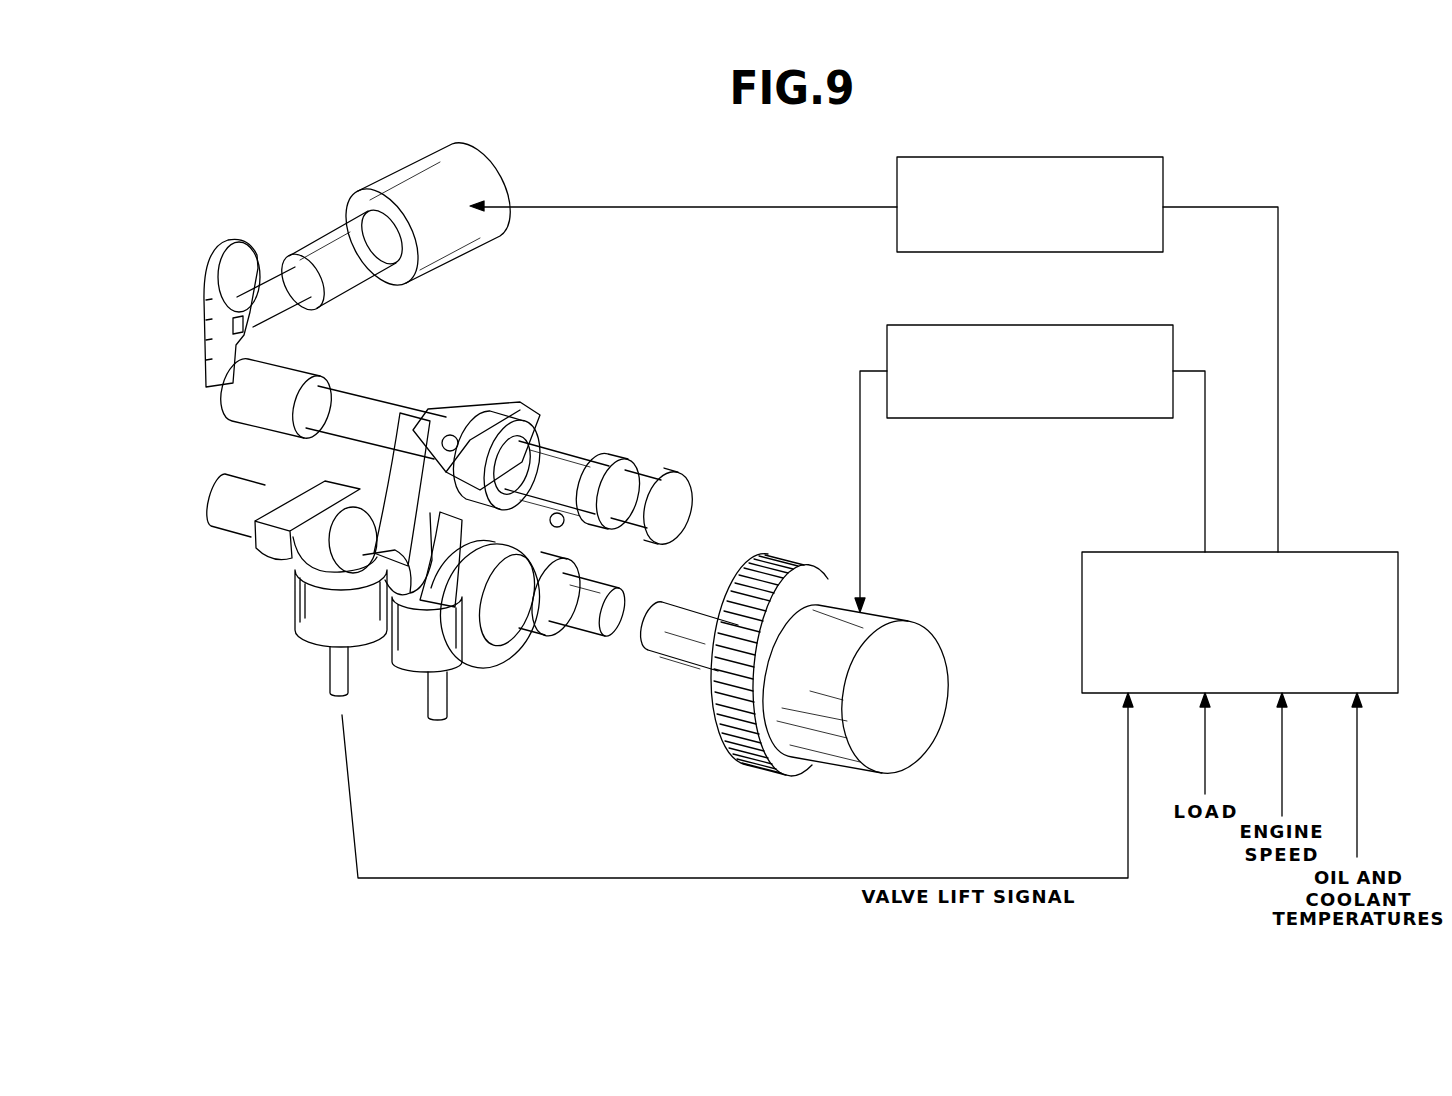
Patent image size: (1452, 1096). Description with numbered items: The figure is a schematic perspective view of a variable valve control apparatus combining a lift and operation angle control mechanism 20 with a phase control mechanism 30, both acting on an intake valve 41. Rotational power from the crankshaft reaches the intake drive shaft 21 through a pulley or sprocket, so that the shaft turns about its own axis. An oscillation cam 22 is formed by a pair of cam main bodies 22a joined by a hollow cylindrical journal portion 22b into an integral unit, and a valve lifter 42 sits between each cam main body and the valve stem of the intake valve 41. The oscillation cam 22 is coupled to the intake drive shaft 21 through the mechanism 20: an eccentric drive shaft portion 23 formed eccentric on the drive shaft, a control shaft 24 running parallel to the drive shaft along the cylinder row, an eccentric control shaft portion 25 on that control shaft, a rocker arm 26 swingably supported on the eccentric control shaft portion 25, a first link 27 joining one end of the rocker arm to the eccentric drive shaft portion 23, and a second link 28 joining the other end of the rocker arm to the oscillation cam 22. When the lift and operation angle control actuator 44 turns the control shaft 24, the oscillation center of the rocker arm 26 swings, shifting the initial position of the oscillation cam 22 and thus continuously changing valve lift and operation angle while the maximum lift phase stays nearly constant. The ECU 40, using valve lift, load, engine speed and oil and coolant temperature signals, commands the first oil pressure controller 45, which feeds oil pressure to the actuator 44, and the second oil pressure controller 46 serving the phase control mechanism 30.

The lift and operation angle control mechanism 20 is at (614, 347).
The intake drive shaft 21 is at (690, 620).
The oscillation cam 22 is at (302, 643).
The cam main body 22a is at (330, 600).
The hollow cylindrical journal portion 22b is at (333, 567).
The eccentric drive shaft portion 23 is at (500, 637).
The control shaft 24 is at (582, 470).
The eccentric control shaft portion 25 is at (493, 497).
The rocker arm 26 is at (467, 430).
The first link 27 is at (462, 622).
The second link 28 is at (407, 463).
The phase control mechanism 30 is at (880, 628).
The ECU 40 is at (1160, 550).
The intake valve 41 is at (423, 708).
The valve lifter 42 is at (297, 593).
The lift and operation angle control actuator 44 is at (460, 222).
The first oil pressure controller 45 is at (1163, 178).
The second oil pressure controller 46 is at (1175, 342).